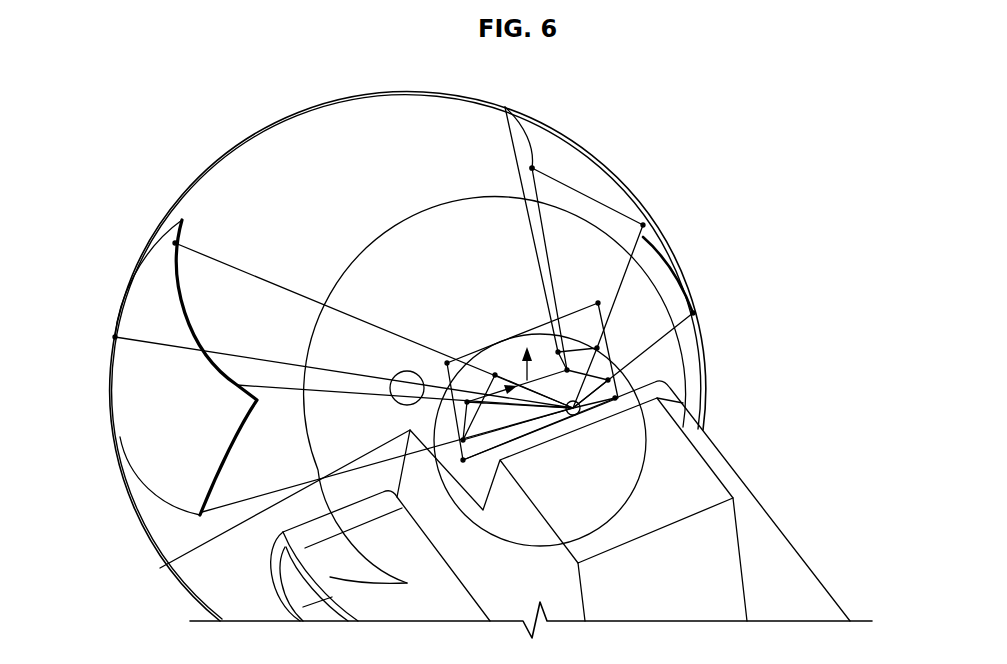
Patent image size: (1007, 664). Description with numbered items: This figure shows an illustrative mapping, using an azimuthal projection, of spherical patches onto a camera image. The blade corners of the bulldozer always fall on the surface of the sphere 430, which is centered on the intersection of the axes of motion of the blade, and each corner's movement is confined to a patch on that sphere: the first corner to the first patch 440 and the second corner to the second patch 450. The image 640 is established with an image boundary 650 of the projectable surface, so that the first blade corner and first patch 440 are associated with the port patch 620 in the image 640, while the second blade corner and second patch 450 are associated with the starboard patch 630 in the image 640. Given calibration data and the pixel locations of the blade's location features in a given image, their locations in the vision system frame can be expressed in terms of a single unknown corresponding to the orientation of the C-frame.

The sphere 430 is at (200, 175).
The first patch 440 is at (120, 437).
The second patch 450 is at (600, 165).
The port patch 620 is at (272, 550).
The starboard patch 630 is at (623, 357).
The image 640 is at (612, 313).
The image boundary 650 is at (637, 440).